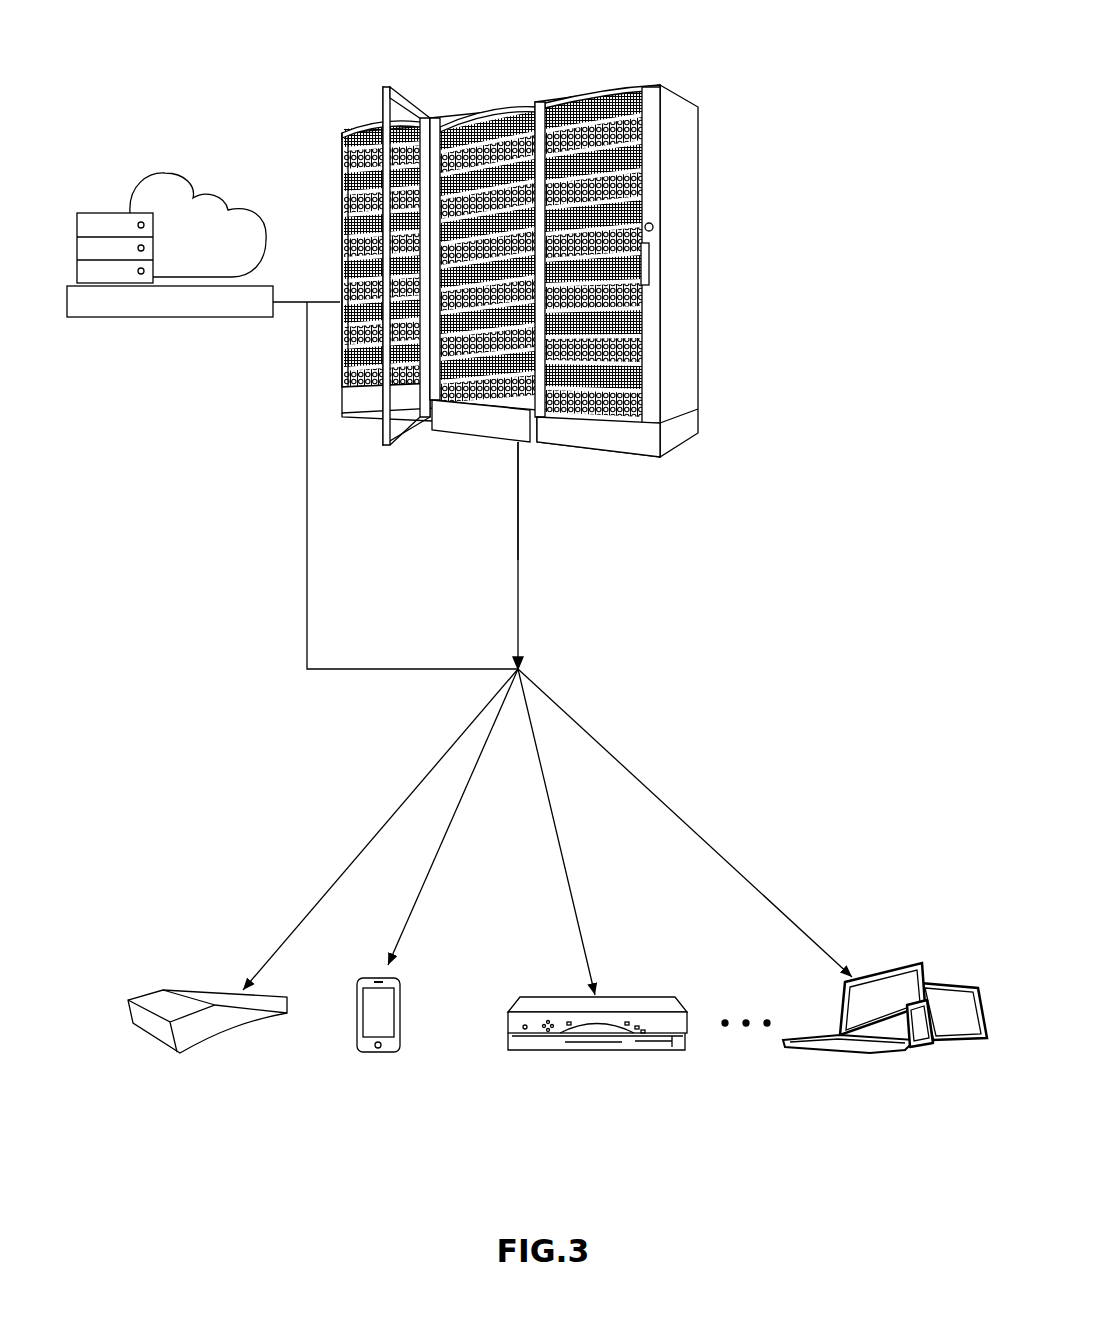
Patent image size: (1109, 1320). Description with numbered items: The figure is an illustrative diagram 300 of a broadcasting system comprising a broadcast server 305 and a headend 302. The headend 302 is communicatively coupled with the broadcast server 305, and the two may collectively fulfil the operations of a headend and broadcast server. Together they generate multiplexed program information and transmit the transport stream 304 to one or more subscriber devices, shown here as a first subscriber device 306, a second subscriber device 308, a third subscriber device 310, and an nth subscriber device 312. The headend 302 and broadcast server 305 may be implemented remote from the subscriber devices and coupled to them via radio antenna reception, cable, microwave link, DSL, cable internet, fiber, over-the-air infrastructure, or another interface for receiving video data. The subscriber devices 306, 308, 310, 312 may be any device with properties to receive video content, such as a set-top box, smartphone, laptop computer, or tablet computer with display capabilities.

The illustrative diagram 300 is at (497, 64).
The headend 302 is at (665, 526).
The transport stream 304 is at (421, 564).
The broadcast server 305 is at (149, 411).
The subscriber device 1 306 is at (186, 1147).
The subscriber device 2 308 is at (400, 1147).
The subscriber device 3 310 is at (575, 1147).
The subscriber device n 312 is at (826, 1147).